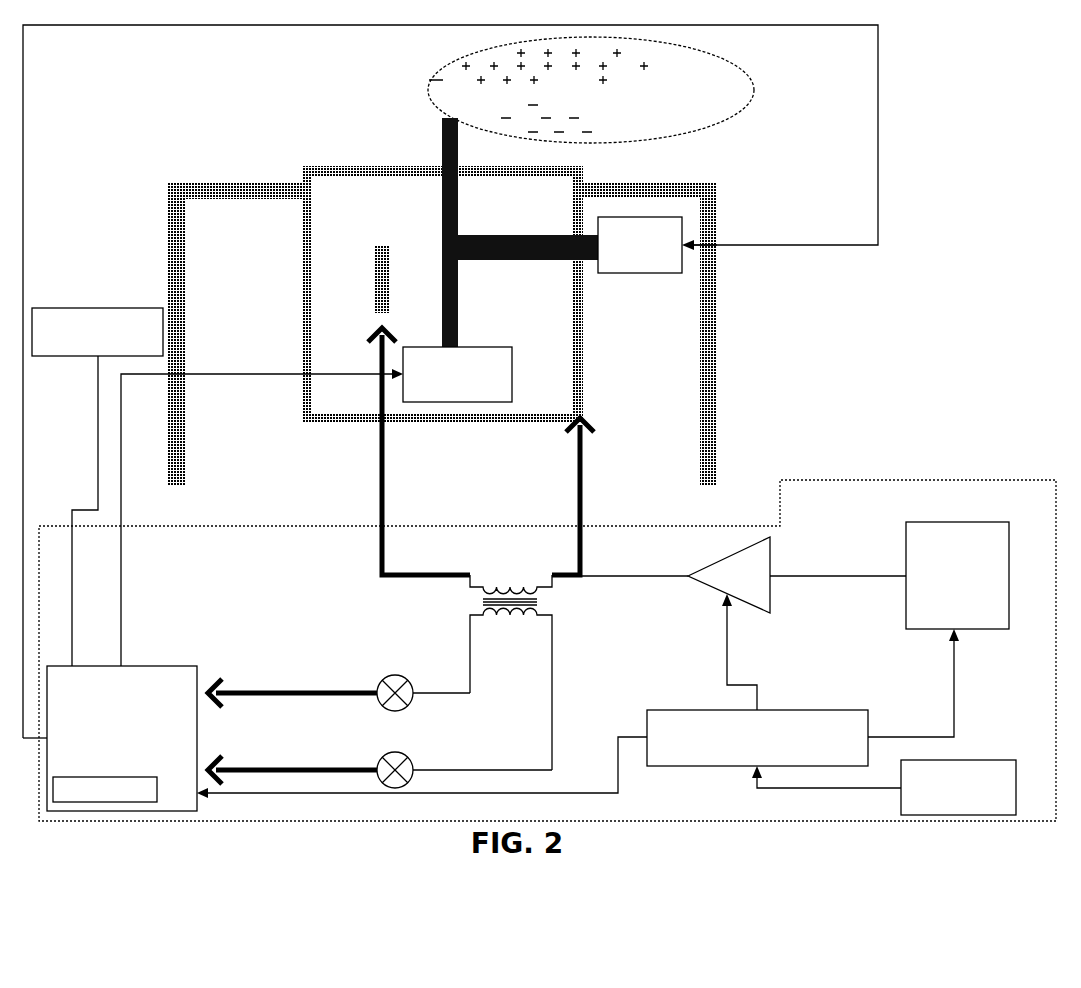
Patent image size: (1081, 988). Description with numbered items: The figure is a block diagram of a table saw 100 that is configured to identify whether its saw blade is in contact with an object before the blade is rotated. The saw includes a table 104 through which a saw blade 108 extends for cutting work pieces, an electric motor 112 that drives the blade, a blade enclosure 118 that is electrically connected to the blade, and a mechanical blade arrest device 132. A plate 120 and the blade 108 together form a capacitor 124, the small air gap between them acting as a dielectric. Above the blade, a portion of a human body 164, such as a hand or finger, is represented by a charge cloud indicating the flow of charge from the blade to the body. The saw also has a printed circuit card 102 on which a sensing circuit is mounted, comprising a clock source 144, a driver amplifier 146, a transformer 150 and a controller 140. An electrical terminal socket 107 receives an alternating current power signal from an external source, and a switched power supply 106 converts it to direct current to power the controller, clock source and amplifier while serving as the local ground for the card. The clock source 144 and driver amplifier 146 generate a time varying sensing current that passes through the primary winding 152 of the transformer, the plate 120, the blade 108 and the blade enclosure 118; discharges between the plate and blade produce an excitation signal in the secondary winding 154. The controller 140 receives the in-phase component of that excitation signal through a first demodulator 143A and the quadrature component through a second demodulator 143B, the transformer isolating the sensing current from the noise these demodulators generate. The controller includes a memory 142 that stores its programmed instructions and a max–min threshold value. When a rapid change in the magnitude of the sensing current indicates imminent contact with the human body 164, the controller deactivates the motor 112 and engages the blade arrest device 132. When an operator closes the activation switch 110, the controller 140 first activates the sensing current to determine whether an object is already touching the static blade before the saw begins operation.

The table saw 100 is at (870, 340).
The printed circuit card 102 is at (875, 480).
The table 104 is at (283, 183).
The switched power supply 106 is at (805, 710).
The electrical terminal socket 107 is at (980, 760).
The saw blade 108 is at (460, 217).
The activation switch 110 is at (58, 308).
The electric motor 112 is at (617, 273).
The blade enclosure 118 is at (387, 166).
The plate 120 is at (378, 250).
The capacitor 124 is at (405, 240).
The blade arrest device 132 is at (480, 347).
The controller 140 is at (133, 717).
The memory 142 is at (108, 777).
The first demodulator 143A is at (388, 676).
The second demodulator 143B is at (393, 752).
The clock source 144 is at (918, 522).
The driver amplifier 146 is at (748, 604).
The transformer 150 is at (478, 655).
The primary winding 152 is at (524, 590).
The secondary winding 154 is at (502, 615).
The human body 164 is at (727, 121).